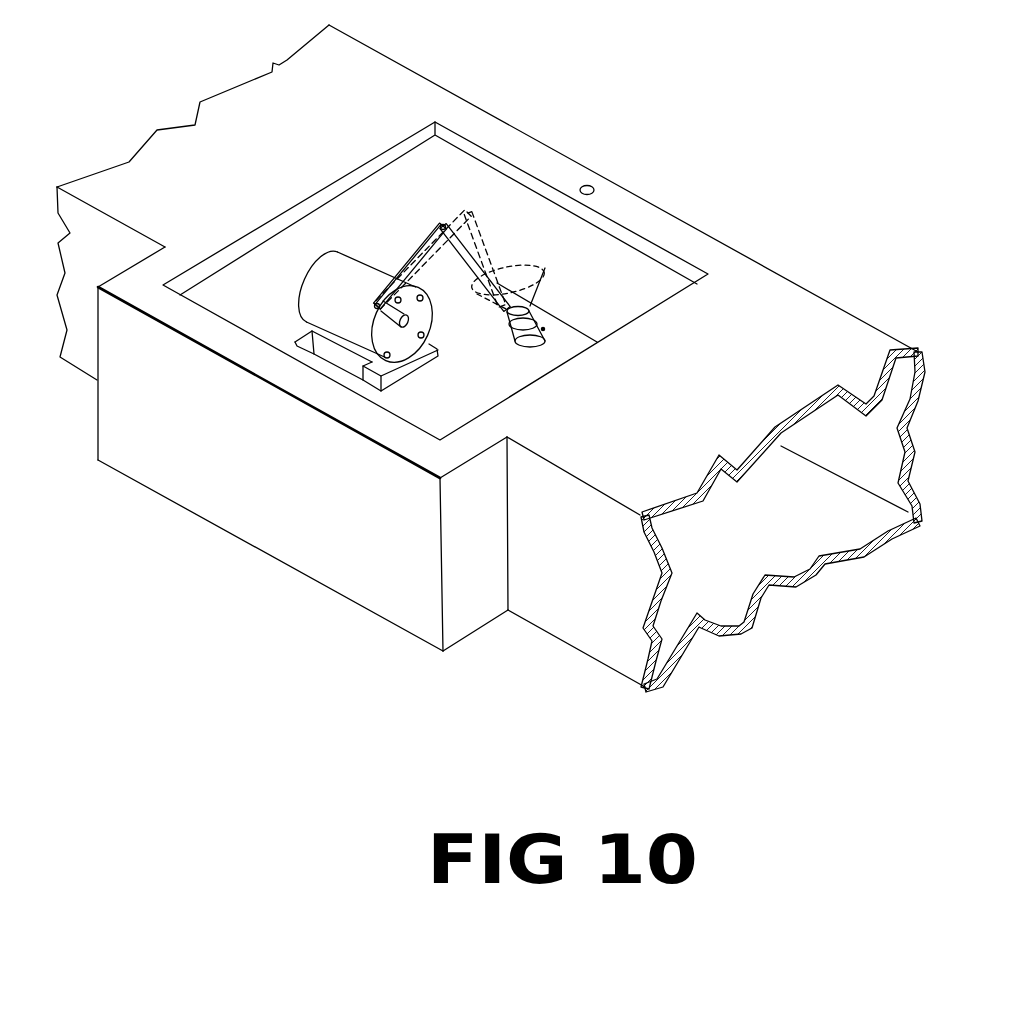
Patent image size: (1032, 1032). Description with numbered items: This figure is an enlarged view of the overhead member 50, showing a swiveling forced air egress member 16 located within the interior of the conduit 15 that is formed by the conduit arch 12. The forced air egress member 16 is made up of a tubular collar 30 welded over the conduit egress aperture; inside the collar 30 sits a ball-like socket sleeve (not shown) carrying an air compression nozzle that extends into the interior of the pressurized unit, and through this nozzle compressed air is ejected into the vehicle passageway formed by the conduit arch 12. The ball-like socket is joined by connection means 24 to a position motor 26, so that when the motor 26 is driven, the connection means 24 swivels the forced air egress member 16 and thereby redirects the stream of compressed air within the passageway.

The conduit arch 12 is at (770, 298).
The conduit 15 is at (615, 277).
The forced air egress member 16 is at (502, 332).
The connection means 24 is at (427, 233).
The position motor 26 is at (335, 268).
The tubular collar 30 is at (535, 333).
The overhead member 50 is at (495, 133).